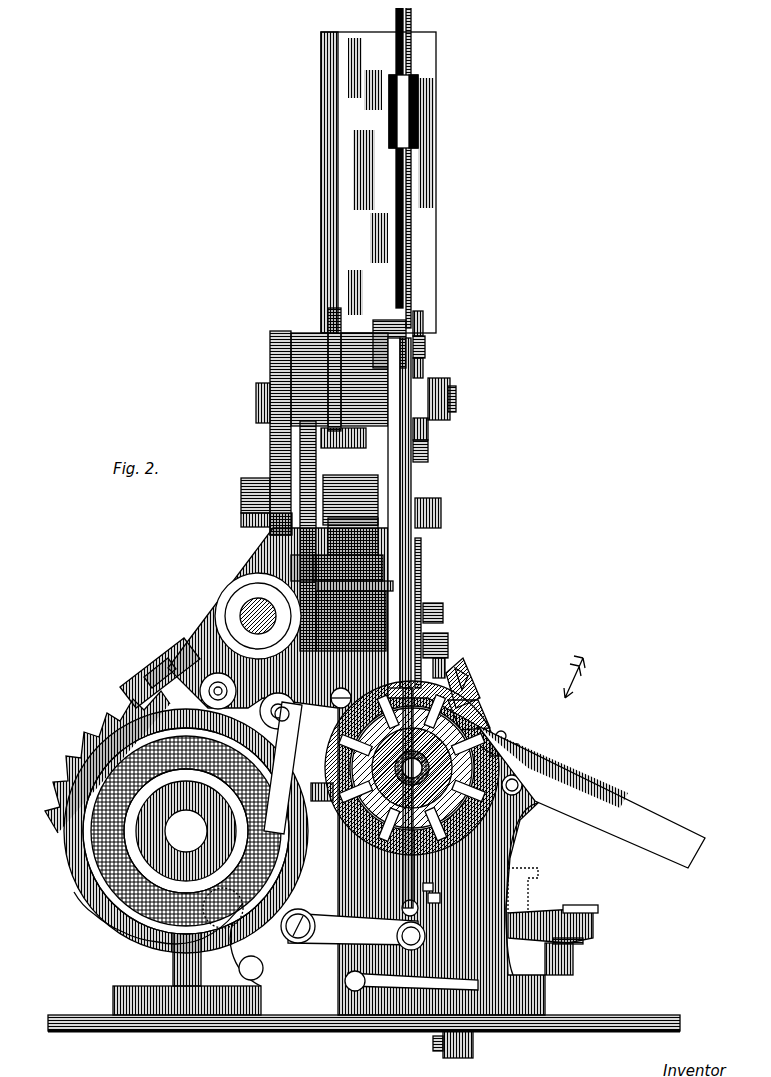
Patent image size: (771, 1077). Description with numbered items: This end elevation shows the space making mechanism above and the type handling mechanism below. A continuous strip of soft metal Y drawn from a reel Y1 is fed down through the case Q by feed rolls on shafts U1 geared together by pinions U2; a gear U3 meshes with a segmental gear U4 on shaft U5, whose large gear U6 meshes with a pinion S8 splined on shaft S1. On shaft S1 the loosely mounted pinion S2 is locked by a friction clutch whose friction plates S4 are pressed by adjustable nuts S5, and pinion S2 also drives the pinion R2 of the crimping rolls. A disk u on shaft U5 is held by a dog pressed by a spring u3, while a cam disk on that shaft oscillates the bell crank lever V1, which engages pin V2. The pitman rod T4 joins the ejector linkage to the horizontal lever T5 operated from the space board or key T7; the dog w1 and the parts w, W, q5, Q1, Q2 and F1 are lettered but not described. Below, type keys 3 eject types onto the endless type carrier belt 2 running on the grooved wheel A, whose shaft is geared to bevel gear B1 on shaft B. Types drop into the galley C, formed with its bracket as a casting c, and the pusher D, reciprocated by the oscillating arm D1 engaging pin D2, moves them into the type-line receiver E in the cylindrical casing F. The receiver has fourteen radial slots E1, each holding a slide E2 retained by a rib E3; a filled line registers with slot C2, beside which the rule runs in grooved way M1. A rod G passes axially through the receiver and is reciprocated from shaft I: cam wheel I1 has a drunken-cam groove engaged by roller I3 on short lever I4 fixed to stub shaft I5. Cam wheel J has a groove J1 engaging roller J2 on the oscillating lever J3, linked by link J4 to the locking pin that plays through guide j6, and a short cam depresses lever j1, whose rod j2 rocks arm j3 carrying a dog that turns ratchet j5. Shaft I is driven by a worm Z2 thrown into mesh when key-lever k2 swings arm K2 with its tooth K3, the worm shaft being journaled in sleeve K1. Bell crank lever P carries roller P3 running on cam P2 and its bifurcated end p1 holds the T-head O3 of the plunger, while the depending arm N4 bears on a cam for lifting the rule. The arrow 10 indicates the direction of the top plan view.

The continuous strip of soft metal Y is at (396, 262).
The reel Y1 is at (396, 70).
The large gear U6 is at (263, 346).
The shaft U5 is at (248, 393).
The segmental gear U4 is at (309, 379).
The gear U3 is at (321, 305).
The pinions U2 is at (372, 318).
The feed roll shafts U1 is at (386, 312).
The pin w is at (415, 306).
The dog w1 is at (417, 320).
The disk u is at (415, 358).
The collar q5 is at (430, 376).
The nut W is at (444, 392).
The pin V2 is at (420, 428).
The bell crank lever V1 is at (418, 446).
The slide Q1 is at (392, 460).
The case Q is at (403, 478).
The block Q2 is at (433, 496).
The friction plates S4 is at (292, 432).
The spring u3 is at (343, 438).
The shaft S1 is at (240, 470).
The adjustable nuts S5 is at (236, 512).
The pinion S8 is at (268, 520).
The pinion S2 is at (350, 500).
The bifurcated end p1 is at (352, 548).
The pinion R2 is at (292, 560).
The endless type carrier belt 2 is at (380, 600).
The grooved wheel A is at (413, 555).
The pitman rod T4 is at (435, 604).
The oscillating arm D1 is at (440, 634).
The pusher D is at (437, 660).
The grooved way M1 is at (456, 668).
The pin D2 is at (458, 672).
The slot C2 is at (465, 690).
The pin F1 is at (494, 724).
The bevel gear B1 is at (230, 590).
The shaft B is at (233, 608).
The sleeve K1 is at (186, 650).
The friction roller P3 is at (140, 678).
The bell crank lever P is at (212, 665).
The T-head O3 is at (278, 701).
The shaft I is at (186, 831).
The arm K2 is at (195, 825).
The cam wheel I1 is at (66, 846).
The worm Z2 is at (78, 728).
The cam roller I3 is at (72, 892).
The cam groove J1 is at (96, 908).
The cam wheel J is at (118, 918).
The roller J2 is at (145, 936).
The tooth K3 is at (237, 902).
The type-line receiver E is at (470, 732).
The rod G is at (412, 768).
The slots E1 is at (412, 768).
The rib E3 is at (486, 740).
The slide E2 is at (510, 744).
The casing F is at (514, 777).
The arrow 10 is at (575, 652).
The galley C is at (632, 790).
The casting c is at (505, 836).
The type keys 3 is at (522, 872).
The key-lever k2 is at (586, 916).
The space board or key T7 is at (566, 952).
The depending arm N4 is at (283, 768).
The rocking arm j3 is at (318, 783).
The rod j2 is at (353, 929).
The short lever I4 is at (307, 926).
The oscillating lever J3 is at (401, 936).
The link J4 is at (411, 900).
The ratchet j5 is at (432, 888).
The guide j6 is at (426, 877).
The cam P2 is at (256, 954).
The stub shaft I5 is at (376, 974).
The oscillating lever j1 is at (322, 1024).
The horizontal lever T5 is at (450, 1050).